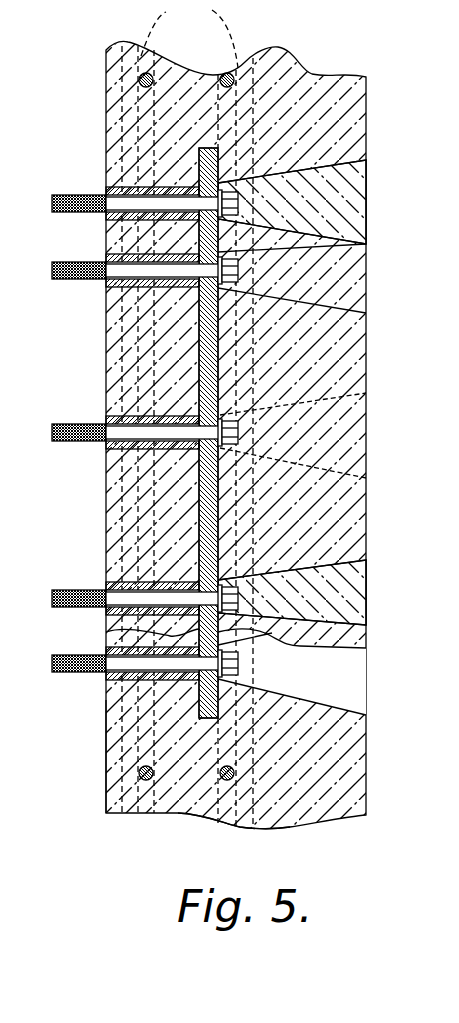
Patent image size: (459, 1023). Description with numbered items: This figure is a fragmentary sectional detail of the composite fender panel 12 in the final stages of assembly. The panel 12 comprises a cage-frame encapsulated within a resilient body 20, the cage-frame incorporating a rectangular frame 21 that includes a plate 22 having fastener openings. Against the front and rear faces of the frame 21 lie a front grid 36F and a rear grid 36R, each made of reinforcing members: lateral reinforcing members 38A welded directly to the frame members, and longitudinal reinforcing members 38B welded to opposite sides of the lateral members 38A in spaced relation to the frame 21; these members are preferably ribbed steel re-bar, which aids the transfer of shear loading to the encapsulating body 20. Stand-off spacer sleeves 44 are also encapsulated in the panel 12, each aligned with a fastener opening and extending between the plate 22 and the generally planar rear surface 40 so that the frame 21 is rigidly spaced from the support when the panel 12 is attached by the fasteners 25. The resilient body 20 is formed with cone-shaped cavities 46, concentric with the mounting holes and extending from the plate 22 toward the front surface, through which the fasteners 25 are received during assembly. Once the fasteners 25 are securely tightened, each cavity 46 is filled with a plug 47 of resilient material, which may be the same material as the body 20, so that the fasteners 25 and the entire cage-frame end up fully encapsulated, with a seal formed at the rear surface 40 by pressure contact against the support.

The composite fender panel 12 is at (234, 468).
The resilient body 20 is at (293, 784).
The rectangular frame 21 is at (216, 824).
The plate 22 is at (210, 718).
The fasteners 25 is at (106, 427).
The rear grid 36R is at (120, 813).
The front grid 36F is at (260, 830).
The lateral reinforcing members 38A is at (227, 73).
The longitudinal reinforcing members 38B is at (189, 34).
The rear surface 40 is at (106, 772).
The stand-off spacer sleeves 44 is at (106, 448).
The cone-shaped cavities 46 is at (348, 708).
The plug 47 is at (367, 190).